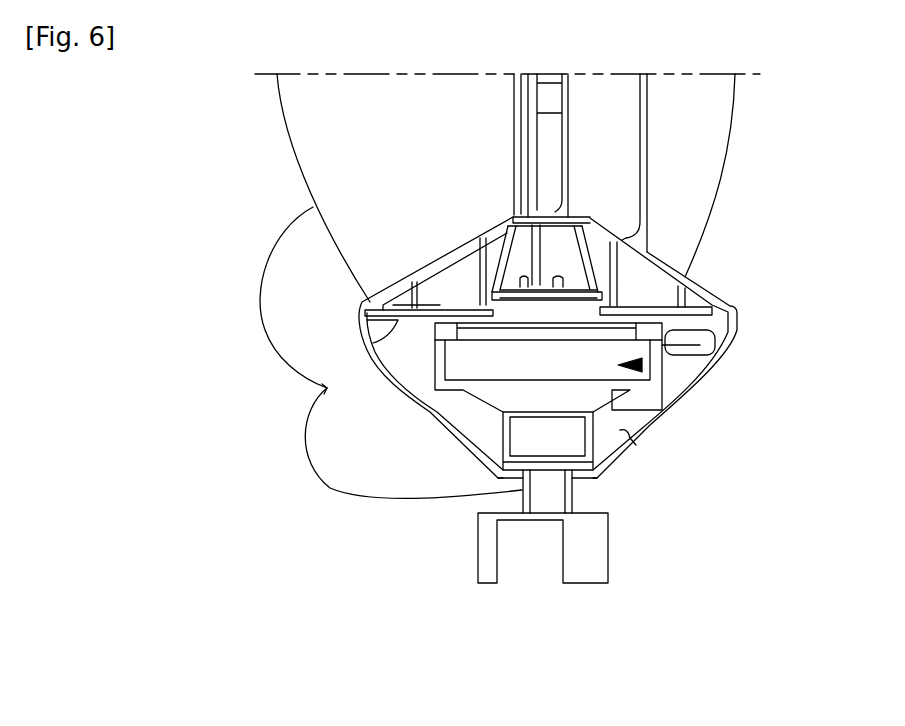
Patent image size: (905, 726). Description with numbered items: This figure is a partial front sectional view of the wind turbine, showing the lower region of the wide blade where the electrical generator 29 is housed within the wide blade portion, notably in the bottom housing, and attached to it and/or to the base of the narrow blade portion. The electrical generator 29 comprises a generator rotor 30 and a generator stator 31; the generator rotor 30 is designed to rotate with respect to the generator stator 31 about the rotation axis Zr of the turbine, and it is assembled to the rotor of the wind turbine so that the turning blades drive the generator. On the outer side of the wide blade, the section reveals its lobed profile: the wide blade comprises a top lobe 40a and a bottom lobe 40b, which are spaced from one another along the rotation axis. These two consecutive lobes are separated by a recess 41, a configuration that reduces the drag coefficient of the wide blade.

The electrical generator 29 is at (642, 366).
The generator rotor 30 is at (580, 313).
The generator stator 31 is at (575, 494).
The top lobe 40a is at (297, 289).
The bottom lobe 40b is at (375, 466).
The recess 41 is at (327, 388).